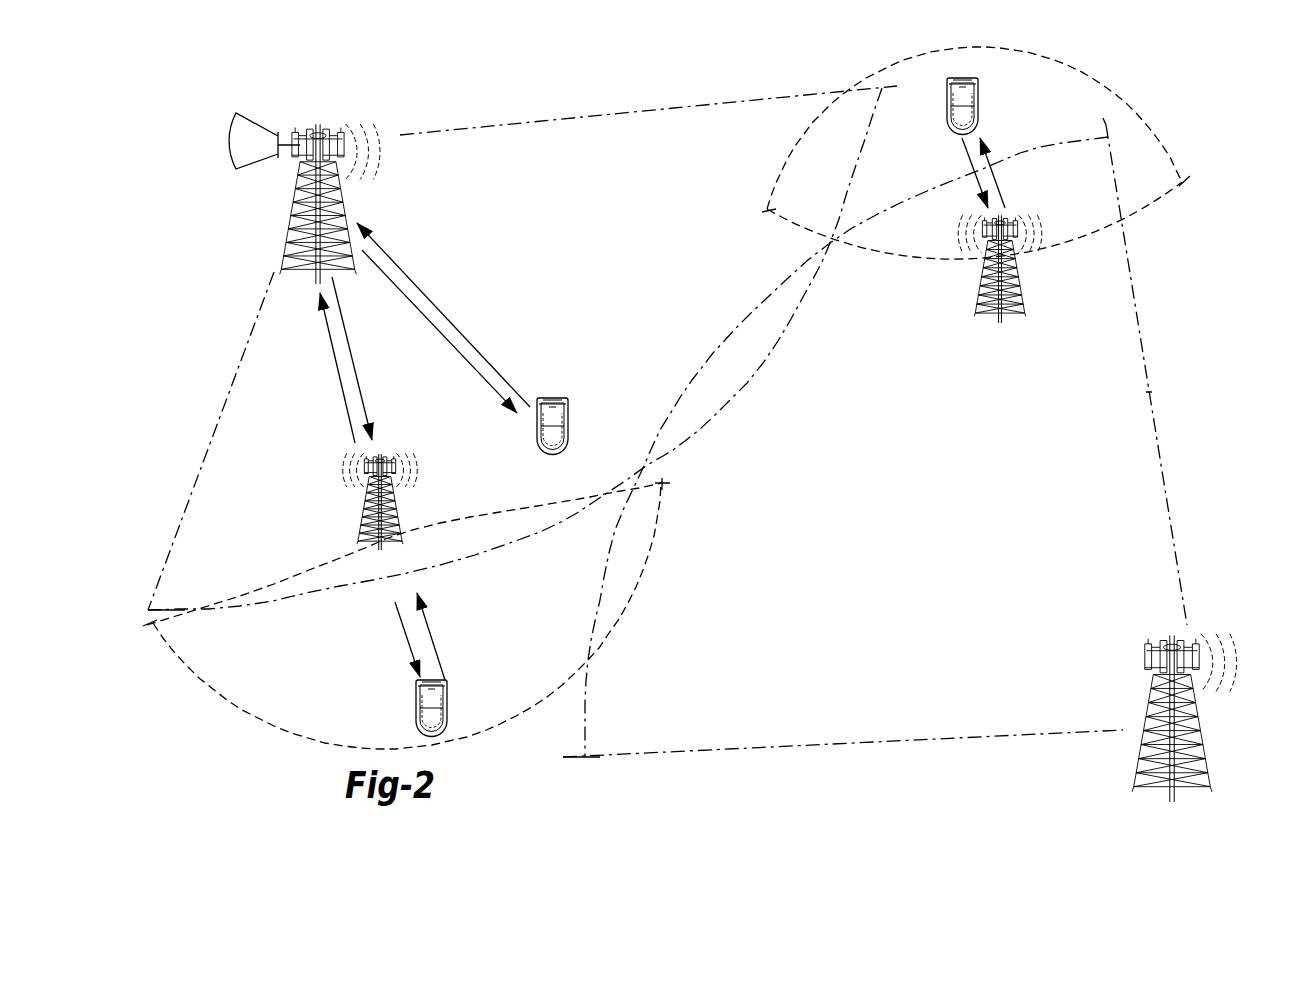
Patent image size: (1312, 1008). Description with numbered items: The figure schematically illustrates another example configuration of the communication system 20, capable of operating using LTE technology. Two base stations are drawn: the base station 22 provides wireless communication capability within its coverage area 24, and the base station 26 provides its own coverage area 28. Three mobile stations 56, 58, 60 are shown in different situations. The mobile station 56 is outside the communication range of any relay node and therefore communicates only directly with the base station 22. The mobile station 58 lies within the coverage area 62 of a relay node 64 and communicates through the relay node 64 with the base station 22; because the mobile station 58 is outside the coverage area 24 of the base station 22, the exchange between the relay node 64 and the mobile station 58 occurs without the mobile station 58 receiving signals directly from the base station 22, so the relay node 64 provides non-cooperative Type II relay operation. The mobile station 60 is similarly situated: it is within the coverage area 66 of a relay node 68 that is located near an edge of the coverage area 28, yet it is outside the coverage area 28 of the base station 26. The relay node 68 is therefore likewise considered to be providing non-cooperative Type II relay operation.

The communication system 20 is at (1216, 88).
The base station 22 is at (292, 203).
The coverage area 24 is at (558, 121).
The base station 26 is at (1156, 690).
The coverage area 28 is at (1148, 392).
The mobile station 56 is at (569, 422).
The mobile station 58 is at (416, 718).
The mobile station 60 is at (979, 108).
The coverage area 62 is at (248, 714).
The relay node 64 is at (365, 512).
The coverage area 66 is at (1092, 75).
The relay node 68 is at (975, 289).